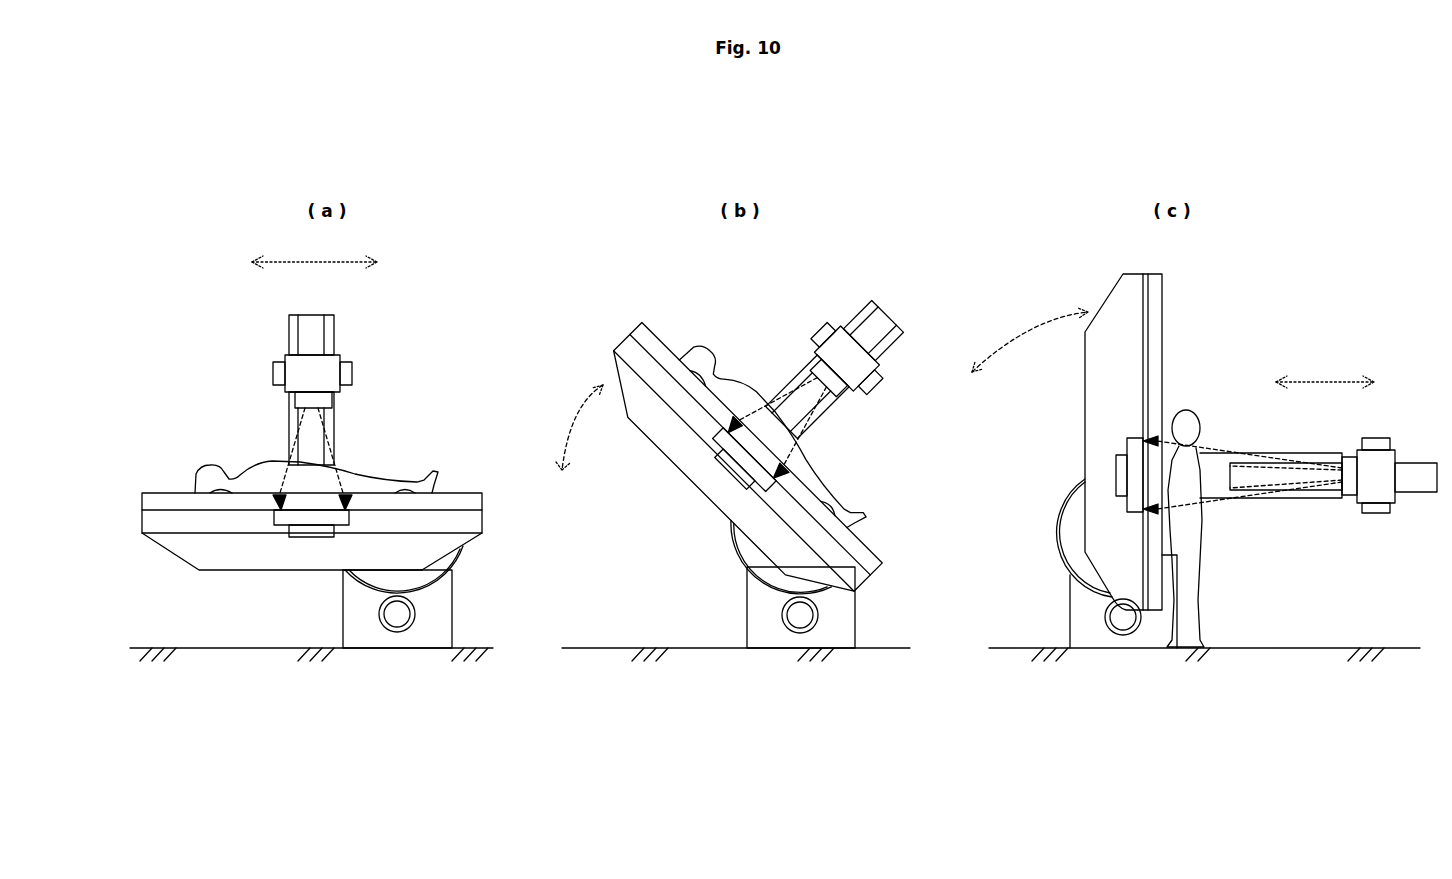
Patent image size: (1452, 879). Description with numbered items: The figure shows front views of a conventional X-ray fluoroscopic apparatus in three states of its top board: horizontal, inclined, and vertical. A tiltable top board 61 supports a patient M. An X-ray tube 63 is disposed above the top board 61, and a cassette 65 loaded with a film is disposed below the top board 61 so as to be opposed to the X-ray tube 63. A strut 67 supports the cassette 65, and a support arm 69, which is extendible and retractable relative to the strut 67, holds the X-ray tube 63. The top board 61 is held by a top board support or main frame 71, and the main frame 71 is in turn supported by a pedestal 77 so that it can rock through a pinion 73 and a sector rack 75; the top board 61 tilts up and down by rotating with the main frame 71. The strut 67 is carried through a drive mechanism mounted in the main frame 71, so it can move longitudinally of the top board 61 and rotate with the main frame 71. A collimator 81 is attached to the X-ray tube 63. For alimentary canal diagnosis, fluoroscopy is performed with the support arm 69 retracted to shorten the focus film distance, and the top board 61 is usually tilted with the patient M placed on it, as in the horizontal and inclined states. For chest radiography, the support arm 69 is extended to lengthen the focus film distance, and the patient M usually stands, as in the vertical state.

The top board 61 is at (470, 493).
The X-ray tube 63 is at (353, 373).
The cassette 65 is at (349, 518).
The strut 67 is at (289, 345).
The support arm 69 is at (312, 315).
The top board support (main frame) 71 is at (484, 516).
The pinion 73 is at (413, 613).
The sector rack 75 is at (456, 552).
The pedestal 77 is at (343, 607).
The collimator 81 is at (295, 400).
The patient M is at (196, 475).